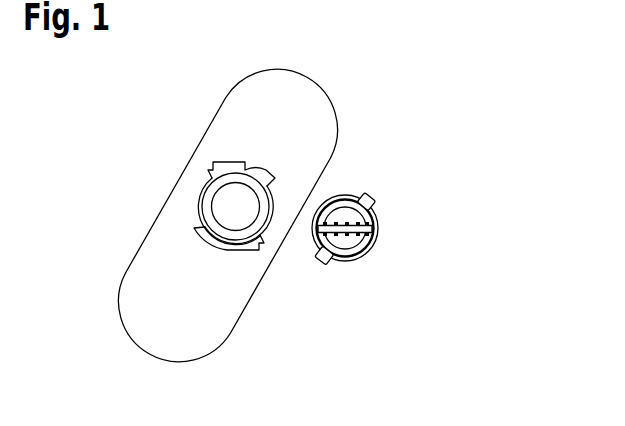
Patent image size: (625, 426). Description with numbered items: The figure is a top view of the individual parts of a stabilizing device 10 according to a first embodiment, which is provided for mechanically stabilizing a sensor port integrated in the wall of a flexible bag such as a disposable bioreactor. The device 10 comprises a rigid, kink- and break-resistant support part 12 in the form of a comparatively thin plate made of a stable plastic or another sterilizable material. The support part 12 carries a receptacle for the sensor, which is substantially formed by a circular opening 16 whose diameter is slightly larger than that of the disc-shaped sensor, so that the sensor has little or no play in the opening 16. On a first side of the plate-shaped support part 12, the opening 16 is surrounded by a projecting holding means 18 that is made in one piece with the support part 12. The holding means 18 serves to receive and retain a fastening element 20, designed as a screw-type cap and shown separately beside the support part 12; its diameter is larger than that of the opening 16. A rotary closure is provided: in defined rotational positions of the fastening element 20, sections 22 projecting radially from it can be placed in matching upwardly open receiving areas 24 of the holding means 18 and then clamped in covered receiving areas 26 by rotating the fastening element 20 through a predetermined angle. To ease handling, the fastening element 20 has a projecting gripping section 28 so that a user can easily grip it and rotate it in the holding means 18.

The stabilizing device 10 is at (380, 93).
The support part 12 is at (230, 90).
The opening 16 is at (216, 208).
The holding means 18 is at (200, 248).
The fastening element 20 is at (383, 230).
The sections 22 is at (327, 267).
The receiving areas 24 is at (228, 167).
The covered receiving areas 26 is at (263, 173).
The gripping section 28 is at (365, 222).